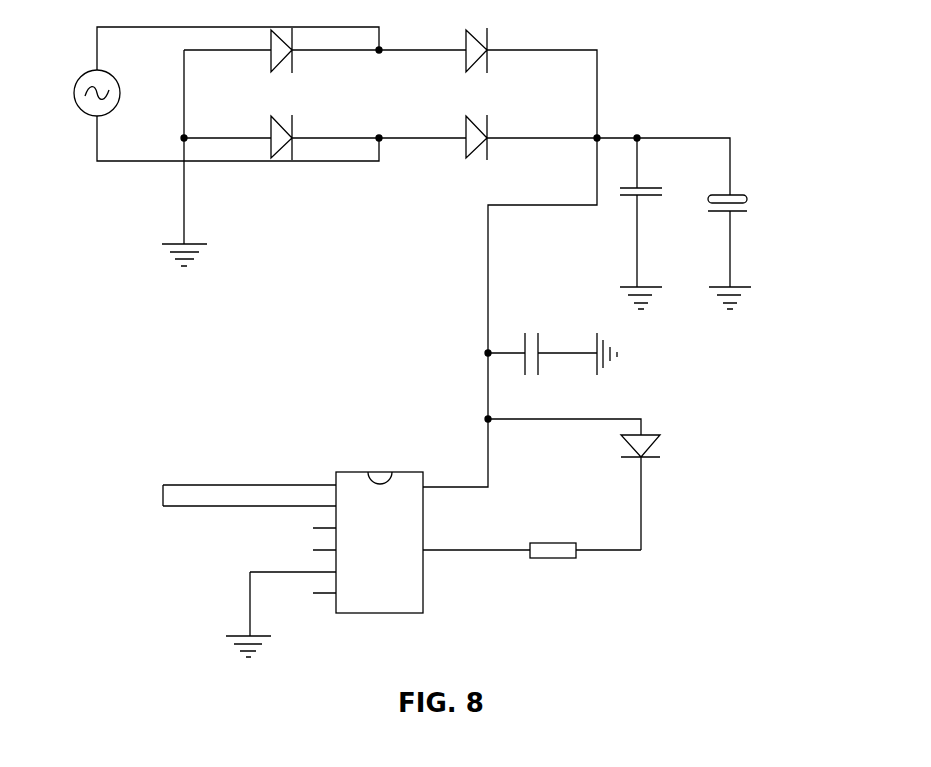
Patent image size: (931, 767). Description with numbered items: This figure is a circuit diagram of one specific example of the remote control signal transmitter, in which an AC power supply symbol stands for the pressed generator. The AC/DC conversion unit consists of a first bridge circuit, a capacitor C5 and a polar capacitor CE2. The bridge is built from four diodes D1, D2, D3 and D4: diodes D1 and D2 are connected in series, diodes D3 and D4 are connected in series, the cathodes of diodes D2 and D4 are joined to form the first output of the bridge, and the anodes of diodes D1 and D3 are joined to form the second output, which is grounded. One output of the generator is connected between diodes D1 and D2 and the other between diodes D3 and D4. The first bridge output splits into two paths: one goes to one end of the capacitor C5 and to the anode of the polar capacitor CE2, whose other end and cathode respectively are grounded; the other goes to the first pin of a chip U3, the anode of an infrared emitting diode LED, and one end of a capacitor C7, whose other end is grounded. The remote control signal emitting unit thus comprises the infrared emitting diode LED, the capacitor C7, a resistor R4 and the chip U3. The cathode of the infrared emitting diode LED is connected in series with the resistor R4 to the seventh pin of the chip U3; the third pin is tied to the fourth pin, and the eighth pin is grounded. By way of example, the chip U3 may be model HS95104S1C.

The diode D1 is at (264, 58).
The diode D2 is at (496, 53).
The diode D3 is at (264, 137).
The diode D4 is at (502, 134).
The capacitor C5 is at (647, 223).
The polar capacitor CE2 is at (750, 252).
The capacitor C7 is at (552, 340).
The infrared emitting diode LED is at (598, 484).
The resistor R4 is at (532, 536).
The chip U3 is at (293, 546).